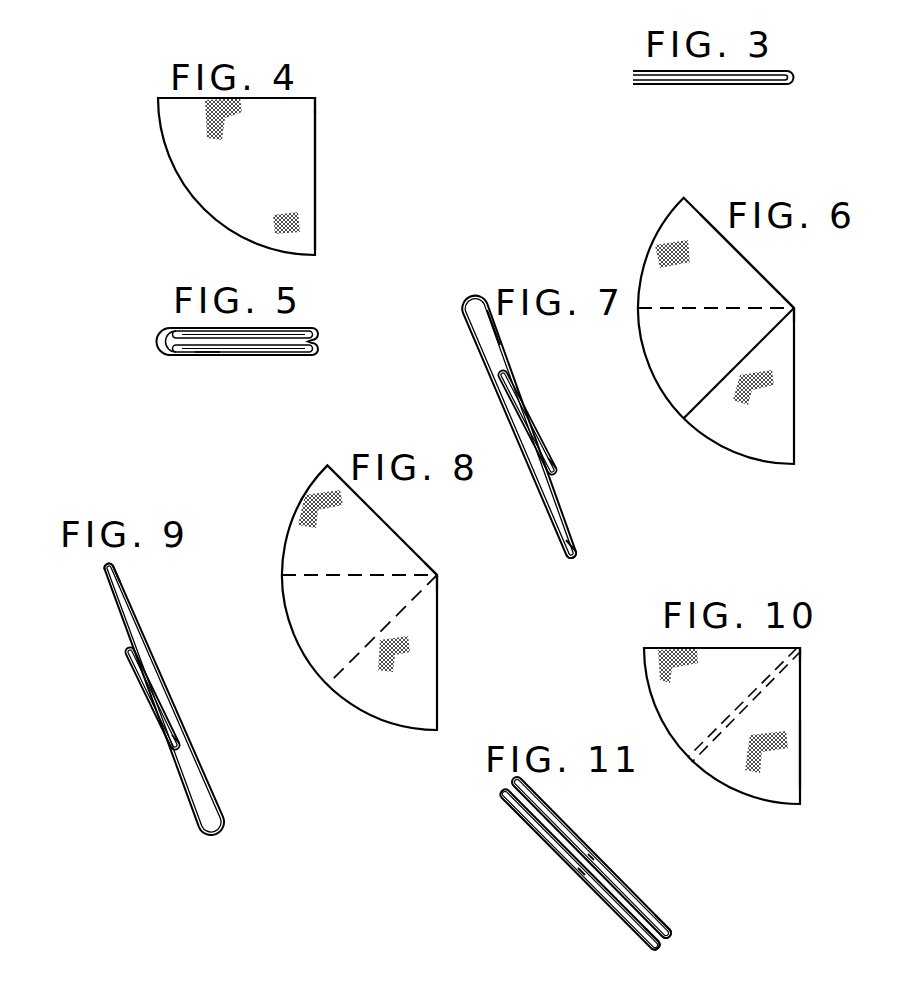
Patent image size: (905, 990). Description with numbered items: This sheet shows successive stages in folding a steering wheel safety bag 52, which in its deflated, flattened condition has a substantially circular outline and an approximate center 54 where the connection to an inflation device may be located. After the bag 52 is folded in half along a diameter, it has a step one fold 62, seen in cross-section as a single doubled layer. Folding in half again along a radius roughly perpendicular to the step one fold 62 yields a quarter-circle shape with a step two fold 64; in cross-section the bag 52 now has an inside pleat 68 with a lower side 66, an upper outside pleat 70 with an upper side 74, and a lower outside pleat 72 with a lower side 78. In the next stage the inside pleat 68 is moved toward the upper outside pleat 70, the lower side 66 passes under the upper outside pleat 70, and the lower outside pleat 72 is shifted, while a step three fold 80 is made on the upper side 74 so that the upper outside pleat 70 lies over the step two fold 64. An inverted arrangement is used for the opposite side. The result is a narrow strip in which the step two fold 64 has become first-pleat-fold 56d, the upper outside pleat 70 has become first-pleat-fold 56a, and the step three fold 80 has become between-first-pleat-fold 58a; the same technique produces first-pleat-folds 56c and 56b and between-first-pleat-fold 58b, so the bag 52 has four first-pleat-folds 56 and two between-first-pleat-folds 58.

In FIG. 4, the steering wheel safety bag 52 is at (322, 127).
In FIG. 6, the steering wheel safety bag 52 is at (648, 225).
In FIG. 8, the steering wheel safety bag 52 is at (458, 628).
In FIG. 10, the steering wheel safety bag 52 is at (808, 697).
In FIG. 4, the approximate center 54 is at (315, 98).
In FIG. 6, the approximate center 54 is at (795, 307).
In FIG. 8, the approximate center 54 is at (438, 573).
In FIG. 10, the approximate center 54 is at (802, 648).
In FIG. 10, the first-pleat-fold 56 is at (663, 648).
In FIG. 11, the first-pleat-fold 56a is at (520, 780).
In FIG. 11, the first-pleat-fold 56b is at (502, 795).
In FIG. 11, the first-pleat-fold 56c is at (668, 935).
In FIG. 11, the first-pleat-fold 56d is at (657, 947).
In FIG. 10, the between-first-pleat-fold 58 is at (715, 728).
In FIG. 11, the between-first-pleat-fold 58a is at (587, 865).
In FIG. 11, the between-first-pleat-fold 58b is at (592, 857).
In FIG. 3, the step #1 fold 62 is at (792, 73).
In FIG. 4, the step #1 fold 62 is at (317, 193).
In FIG. 4, the step #2 fold 64 is at (172, 98).
In FIG. 5, the step #2 fold 64 is at (158, 343).
In FIG. 6, the step #2 fold 64 is at (752, 267).
In FIG. 7, the step #2 fold 64 is at (466, 290).
In FIG. 9, the step #2 fold 64 is at (222, 838).
In FIG. 5, the lower side 66 is at (205, 350).
In FIG. 5, the inside pleat 68 is at (160, 352).
In FIG. 7, the inside pleat 68 is at (495, 371).
In FIG. 9, the inside pleat 68 is at (180, 750).
In FIG. 5, the upper outside pleat 70 is at (320, 330).
In FIG. 7, the upper outside pleat 70 is at (557, 473).
In FIG. 9, the upper outside pleat 70 is at (123, 648).
In FIG. 5, the lower outside pleat 72 is at (320, 348).
In FIG. 7, the lower outside pleat 72 is at (578, 558).
In FIG. 9, the lower outside pleat 72 is at (103, 563).
In FIG. 5, the upper side 74 is at (295, 327).
In FIG. 7, the upper side 74 is at (503, 343).
In FIG. 5, the lower side 78 is at (242, 355).
In FIG. 6, the step #3 fold 80 is at (697, 307).